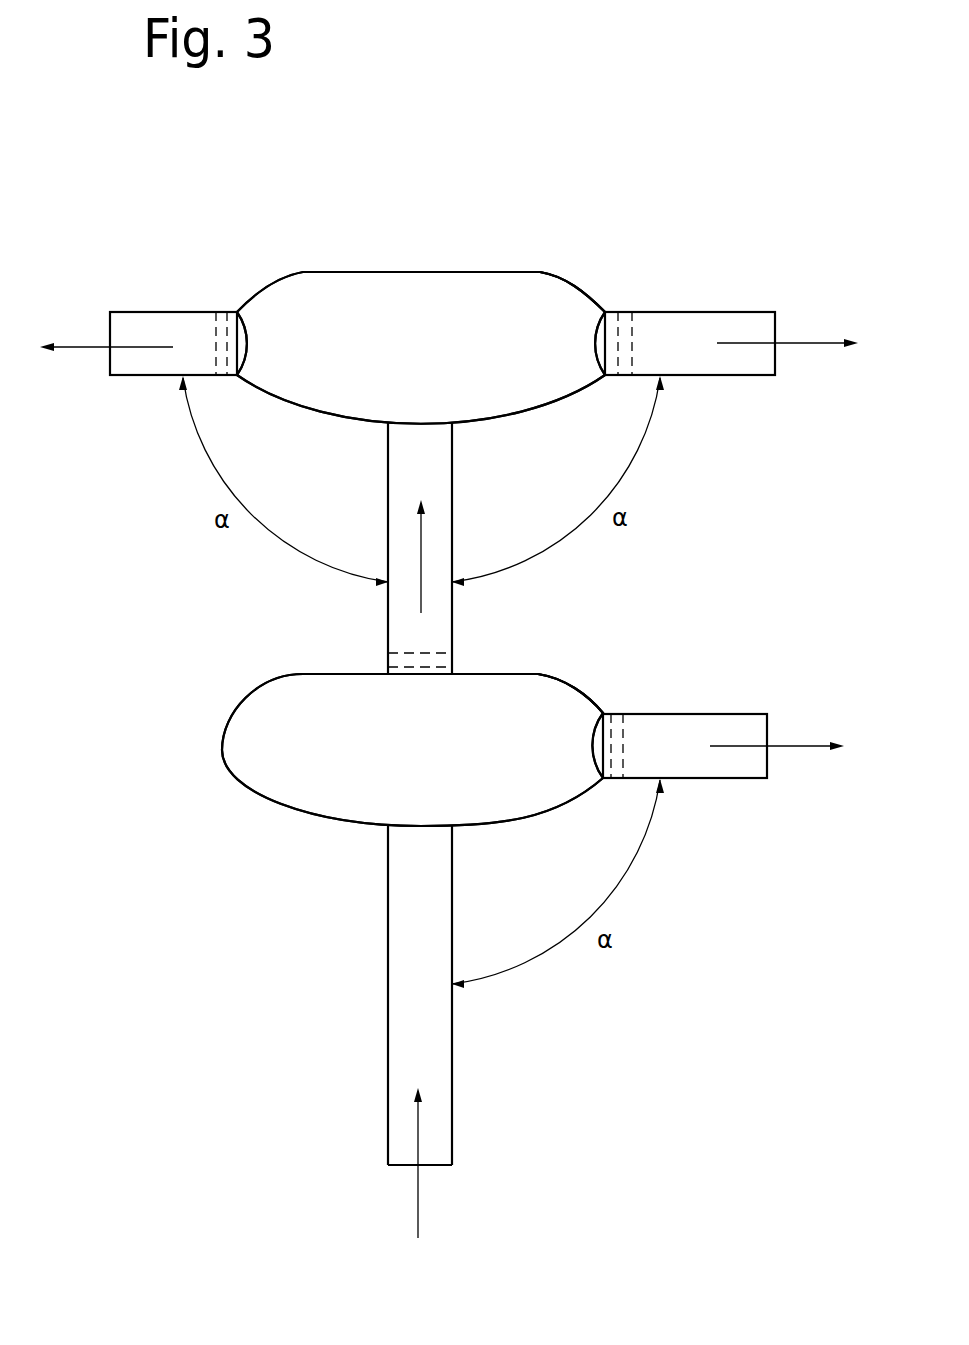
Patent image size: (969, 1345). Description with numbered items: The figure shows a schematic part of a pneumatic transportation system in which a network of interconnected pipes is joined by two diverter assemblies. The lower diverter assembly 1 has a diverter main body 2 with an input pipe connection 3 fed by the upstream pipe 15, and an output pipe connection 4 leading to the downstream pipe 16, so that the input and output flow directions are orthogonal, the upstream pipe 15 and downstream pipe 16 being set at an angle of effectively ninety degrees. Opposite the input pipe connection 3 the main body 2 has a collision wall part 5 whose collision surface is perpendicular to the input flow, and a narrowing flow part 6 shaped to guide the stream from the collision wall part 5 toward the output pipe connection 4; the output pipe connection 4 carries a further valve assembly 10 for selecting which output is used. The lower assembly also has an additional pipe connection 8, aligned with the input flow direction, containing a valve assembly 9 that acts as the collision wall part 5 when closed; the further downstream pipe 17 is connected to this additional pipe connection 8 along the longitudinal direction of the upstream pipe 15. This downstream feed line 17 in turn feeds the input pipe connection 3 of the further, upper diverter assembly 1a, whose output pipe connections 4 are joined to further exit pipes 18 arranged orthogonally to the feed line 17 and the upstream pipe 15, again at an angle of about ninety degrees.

The further diverter assembly 1a is at (590, 270).
The diverter assembly 1 is at (584, 668).
The diverter main body 2 is at (277, 286).
The input pipe connection 3 is at (398, 424).
The output pipe connection 4 is at (218, 328).
The collision wall part 5 is at (408, 275).
The narrowing flow part 6 is at (553, 272).
The additional pipe connection 8 is at (388, 656).
The valve assembly 9 is at (435, 667).
The further valve assembly 10 is at (222, 372).
The upstream pipe 15 is at (423, 1008).
The downstream pipe 16 is at (727, 728).
The further downstream pipe 17 is at (448, 481).
The further exit pipe 18 is at (133, 313).